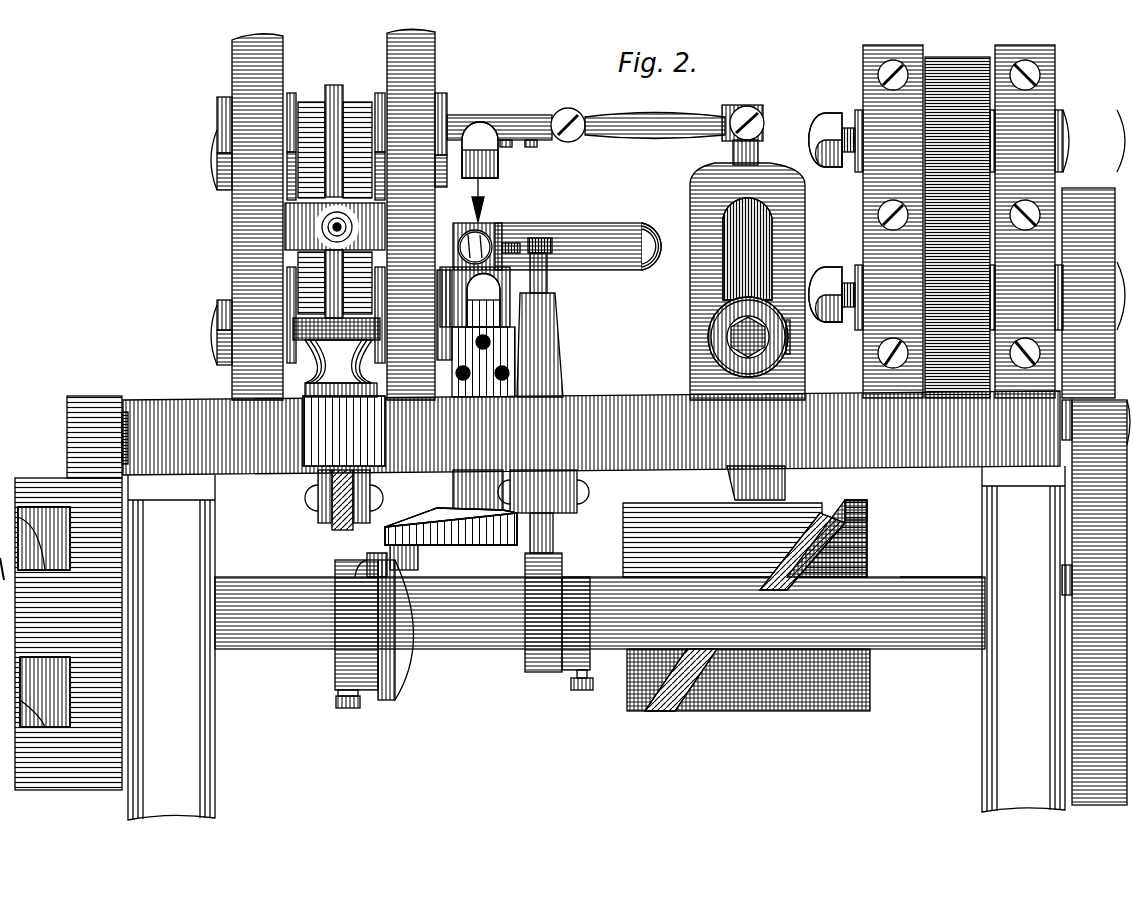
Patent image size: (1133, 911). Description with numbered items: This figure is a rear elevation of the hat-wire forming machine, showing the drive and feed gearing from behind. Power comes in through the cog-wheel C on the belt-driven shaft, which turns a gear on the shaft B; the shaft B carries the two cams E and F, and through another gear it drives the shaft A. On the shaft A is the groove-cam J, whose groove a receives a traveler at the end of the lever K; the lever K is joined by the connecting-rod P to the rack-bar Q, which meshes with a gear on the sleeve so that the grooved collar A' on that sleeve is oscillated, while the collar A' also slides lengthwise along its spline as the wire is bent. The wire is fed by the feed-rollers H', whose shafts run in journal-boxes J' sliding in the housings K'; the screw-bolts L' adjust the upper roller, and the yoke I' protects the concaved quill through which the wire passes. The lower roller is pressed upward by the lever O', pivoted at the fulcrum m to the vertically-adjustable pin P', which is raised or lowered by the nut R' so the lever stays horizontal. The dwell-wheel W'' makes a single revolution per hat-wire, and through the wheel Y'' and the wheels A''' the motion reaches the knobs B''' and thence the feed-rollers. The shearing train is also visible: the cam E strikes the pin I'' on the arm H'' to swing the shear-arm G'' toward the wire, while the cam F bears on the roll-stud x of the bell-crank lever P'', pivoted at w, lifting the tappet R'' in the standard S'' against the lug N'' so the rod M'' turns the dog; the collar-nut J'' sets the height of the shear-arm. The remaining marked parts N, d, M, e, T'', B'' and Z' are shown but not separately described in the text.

The grooved collar A' is at (583, 411).
The lever O' is at (341, 475).
The roll-stud x is at (596, 506).
The shaft B is at (600, 631).
The cam E is at (392, 690).
The cam F is at (545, 658).
The groove-cam J is at (746, 605).
The groove a is at (850, 497).
The cog-wheel C is at (80, 396).
The dwell-wheel W'' is at (61, 619).
The housings K' is at (348, 217).
The journal-boxes J' is at (335, 214).
The feed-rollers H' is at (312, 205).
The screw-bolts L' is at (335, 226).
The yoke I' is at (326, 225).
The nut R' is at (336, 357).
The knobs B''' is at (651, 201).
The rack-bar Q is at (570, 108).
The connecting-rod P is at (674, 110).
The lever K is at (756, 317).
The slot N is at (710, 249).
The ring d is at (710, 337).
The nut M is at (748, 337).
The pin e is at (773, 337).
The lug N'' is at (511, 230).
The rod M'' is at (507, 217).
The shear-arm G'' is at (568, 229).
The cylinder end T'' is at (658, 231).
The knob B'' is at (484, 297).
The collar-nut J'' is at (483, 362).
The tappet R'' is at (556, 270).
The standard S'' is at (555, 345).
The pivot w is at (585, 492).
The bell-crank lever P'' is at (560, 533).
The pin I'' is at (451, 540).
The arm H'' is at (453, 540).
The vertically-adjustable pin P' is at (366, 496).
The fulcrum m is at (312, 503).
The wheels A''' is at (990, 203).
The gear Z' is at (1088, 278).
The wheel Y'' is at (1068, 602).
The shaft A is at (941, 560).